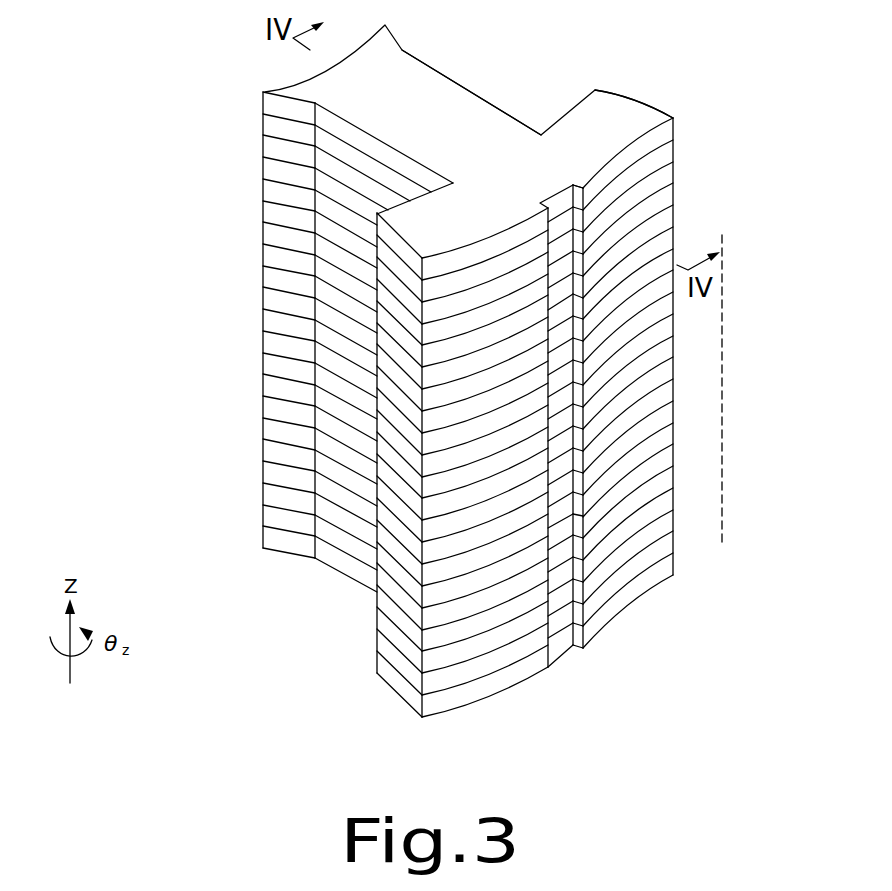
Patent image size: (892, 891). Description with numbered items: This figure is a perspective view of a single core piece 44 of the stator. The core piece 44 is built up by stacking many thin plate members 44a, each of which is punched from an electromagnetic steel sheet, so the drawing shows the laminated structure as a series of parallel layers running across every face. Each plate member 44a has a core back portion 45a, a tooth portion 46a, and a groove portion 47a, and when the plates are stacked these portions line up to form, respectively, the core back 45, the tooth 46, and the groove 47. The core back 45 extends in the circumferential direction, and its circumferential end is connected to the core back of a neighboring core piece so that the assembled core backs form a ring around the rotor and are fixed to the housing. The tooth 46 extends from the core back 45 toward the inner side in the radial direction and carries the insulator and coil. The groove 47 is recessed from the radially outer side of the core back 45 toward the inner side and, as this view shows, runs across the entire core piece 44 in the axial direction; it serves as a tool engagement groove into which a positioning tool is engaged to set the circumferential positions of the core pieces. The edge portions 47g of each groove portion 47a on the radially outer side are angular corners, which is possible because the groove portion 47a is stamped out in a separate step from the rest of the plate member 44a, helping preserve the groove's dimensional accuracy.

The core piece 44 is at (760, 87).
The plate member 44a is at (677, 195).
The core back 45 is at (392, 292).
The core back portion 45a is at (622, 107).
The tooth 46 is at (350, 166).
The tooth portion 46a is at (438, 88).
The groove 47 is at (563, 292).
The groove portion 47a is at (578, 193).
The edge portion 47g is at (558, 465).